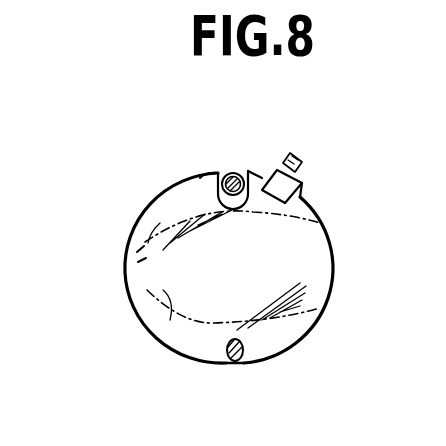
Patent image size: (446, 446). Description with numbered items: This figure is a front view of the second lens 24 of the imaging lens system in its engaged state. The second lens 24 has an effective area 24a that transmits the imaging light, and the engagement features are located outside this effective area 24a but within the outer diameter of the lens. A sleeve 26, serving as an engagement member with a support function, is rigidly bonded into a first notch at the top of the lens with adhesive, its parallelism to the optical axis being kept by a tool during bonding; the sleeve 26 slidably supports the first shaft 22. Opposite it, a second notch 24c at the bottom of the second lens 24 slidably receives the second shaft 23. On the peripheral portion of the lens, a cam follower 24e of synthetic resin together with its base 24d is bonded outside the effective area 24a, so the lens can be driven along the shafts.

The first shaft 22 is at (240, 176).
The second shaft 23 is at (232, 362).
The second lens 24 is at (325, 258).
The effective area 24a is at (135, 251).
The second notch 24c is at (255, 337).
The base 24d is at (306, 190).
The cam follower 24e is at (303, 165).
The sleeve 26 is at (224, 176).